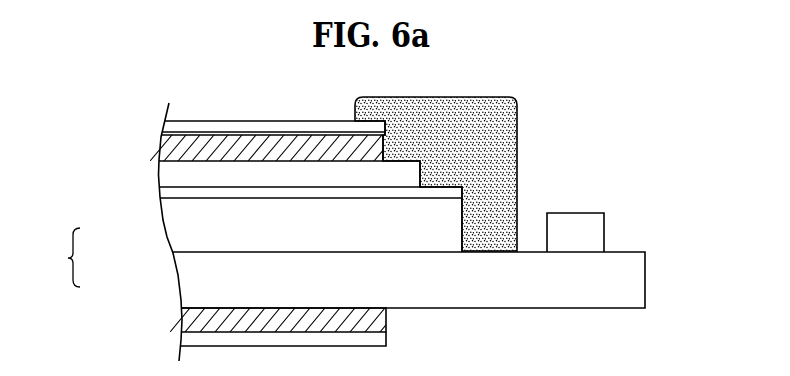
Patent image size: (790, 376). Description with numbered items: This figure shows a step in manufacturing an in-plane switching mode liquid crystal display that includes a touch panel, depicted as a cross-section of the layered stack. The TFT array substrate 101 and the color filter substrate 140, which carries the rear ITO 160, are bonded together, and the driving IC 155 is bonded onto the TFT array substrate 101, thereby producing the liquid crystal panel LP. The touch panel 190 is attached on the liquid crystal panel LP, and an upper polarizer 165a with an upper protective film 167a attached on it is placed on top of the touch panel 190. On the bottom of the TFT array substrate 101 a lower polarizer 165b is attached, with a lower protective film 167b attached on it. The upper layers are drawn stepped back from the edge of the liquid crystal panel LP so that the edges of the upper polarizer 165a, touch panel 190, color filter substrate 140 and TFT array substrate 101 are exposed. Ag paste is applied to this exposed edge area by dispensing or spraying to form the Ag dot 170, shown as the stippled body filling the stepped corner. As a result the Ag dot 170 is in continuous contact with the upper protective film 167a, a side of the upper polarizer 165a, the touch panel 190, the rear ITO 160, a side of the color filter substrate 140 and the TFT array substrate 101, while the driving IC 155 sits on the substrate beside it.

The upper protective film 167a is at (166, 128).
The upper polarizer 165a is at (163, 155).
The touch panel 190 is at (172, 177).
The rear ITO 160 is at (172, 192).
The color filter substrate 140 is at (185, 235).
The TFT array substrate 101 is at (185, 280).
The liquid crystal panel LP is at (61, 257).
The lower polarizer 165b is at (193, 315).
The lower protective film 167b is at (193, 341).
The Ag dot 170 is at (500, 145).
The driving IC 155 is at (595, 232).